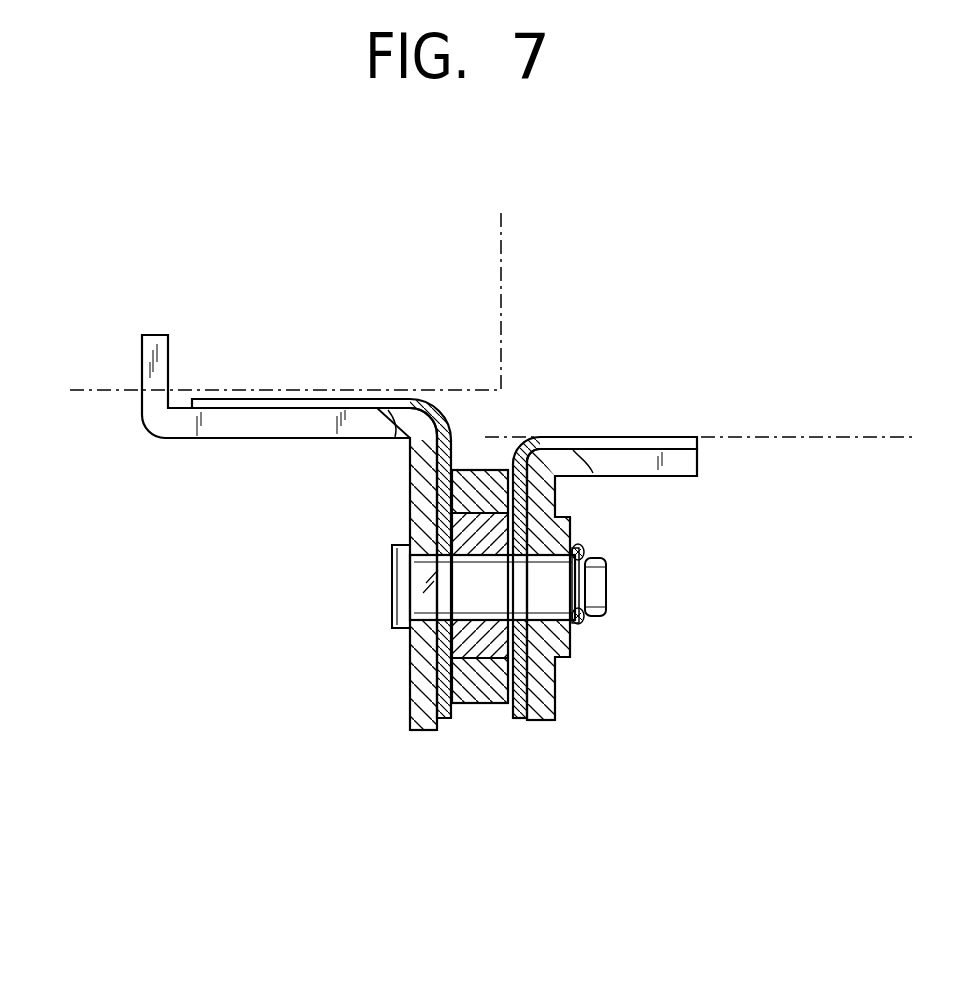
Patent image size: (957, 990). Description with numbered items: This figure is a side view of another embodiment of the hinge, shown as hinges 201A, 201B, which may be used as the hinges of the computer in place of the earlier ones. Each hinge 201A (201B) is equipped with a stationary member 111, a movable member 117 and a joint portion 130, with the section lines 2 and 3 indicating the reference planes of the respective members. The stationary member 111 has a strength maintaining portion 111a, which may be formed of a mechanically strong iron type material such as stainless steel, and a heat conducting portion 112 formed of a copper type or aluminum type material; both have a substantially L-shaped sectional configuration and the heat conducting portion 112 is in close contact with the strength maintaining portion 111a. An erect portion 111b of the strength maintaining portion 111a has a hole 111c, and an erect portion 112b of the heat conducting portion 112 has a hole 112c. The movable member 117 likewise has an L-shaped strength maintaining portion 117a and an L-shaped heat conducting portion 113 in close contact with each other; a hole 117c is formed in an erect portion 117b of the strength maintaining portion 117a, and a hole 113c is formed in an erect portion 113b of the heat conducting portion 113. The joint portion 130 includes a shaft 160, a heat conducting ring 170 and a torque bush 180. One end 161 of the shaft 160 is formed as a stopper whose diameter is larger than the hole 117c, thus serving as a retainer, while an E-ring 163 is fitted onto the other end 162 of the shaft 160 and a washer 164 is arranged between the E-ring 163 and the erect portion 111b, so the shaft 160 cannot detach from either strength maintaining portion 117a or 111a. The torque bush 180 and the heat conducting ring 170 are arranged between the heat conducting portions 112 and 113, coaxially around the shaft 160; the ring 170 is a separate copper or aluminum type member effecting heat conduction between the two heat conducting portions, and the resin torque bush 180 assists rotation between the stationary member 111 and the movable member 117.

The reference plane / center line 2 is at (848, 435).
The reference plane / center line 3 is at (502, 277).
The stationary member 111 is at (666, 627).
The strength maintaining portion 111a is at (648, 470).
The erect portion 111b is at (540, 705).
The hole 111c is at (566, 663).
The heat conducting portion 112 is at (559, 600).
The erect portion 112b is at (520, 720).
The hole 112c is at (483, 700).
The heat conducting portion 113 is at (337, 502).
The erect portion 113b is at (455, 425).
The hole 113c is at (440, 540).
The movable member 117 is at (252, 561).
The strength maintaining portion 117a is at (243, 432).
The erect portion 117b is at (413, 697).
The hole 117c is at (413, 638).
The joint portion 130 is at (563, 835).
The shaft 160 is at (472, 632).
The one end of the shaft 161 is at (396, 575).
The other end of the shaft 162 is at (605, 587).
The E-ring 163 is at (583, 628).
The washer 164 is at (573, 660).
The heat conducting ring 170 is at (487, 482).
The torque bush 180 is at (490, 527).
The hinge 201A is at (318, 848).
The hinge 201B is at (396, 679).